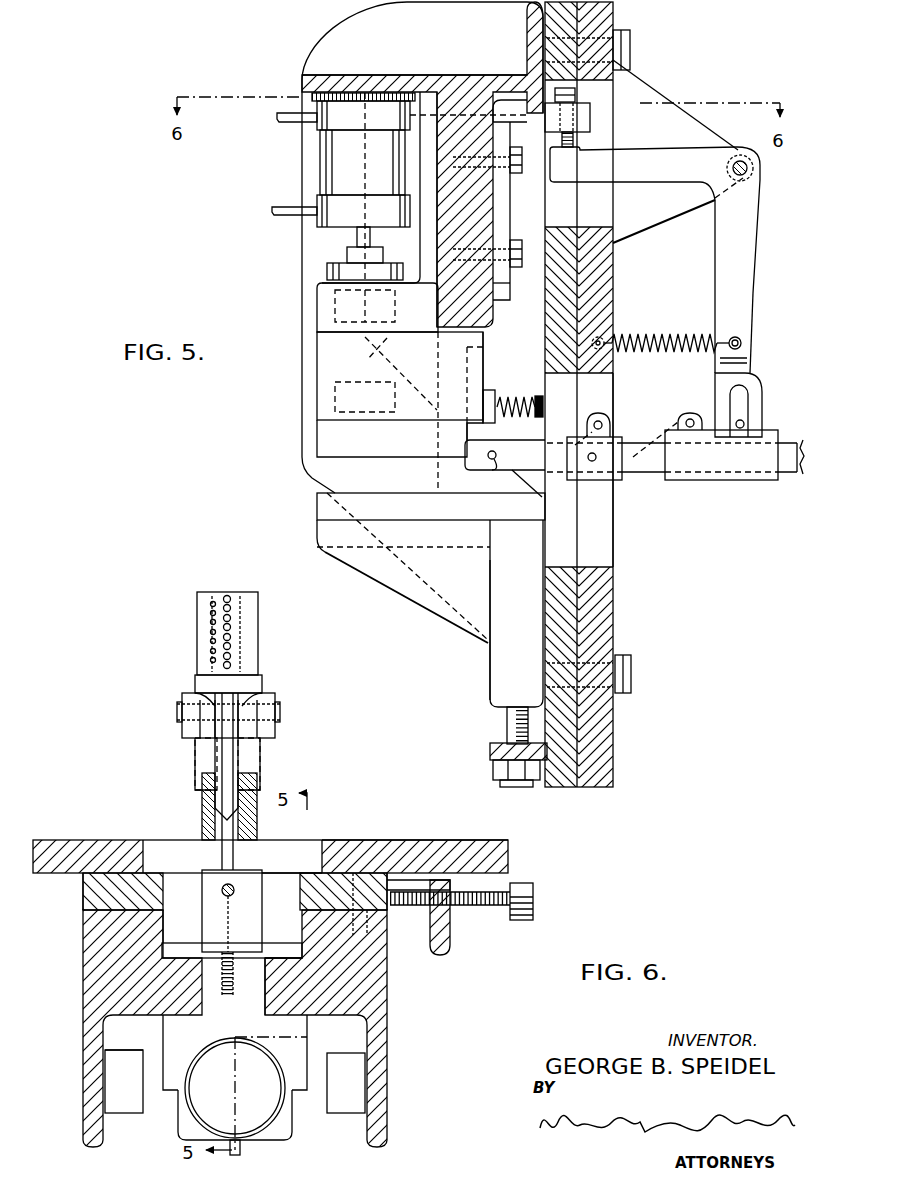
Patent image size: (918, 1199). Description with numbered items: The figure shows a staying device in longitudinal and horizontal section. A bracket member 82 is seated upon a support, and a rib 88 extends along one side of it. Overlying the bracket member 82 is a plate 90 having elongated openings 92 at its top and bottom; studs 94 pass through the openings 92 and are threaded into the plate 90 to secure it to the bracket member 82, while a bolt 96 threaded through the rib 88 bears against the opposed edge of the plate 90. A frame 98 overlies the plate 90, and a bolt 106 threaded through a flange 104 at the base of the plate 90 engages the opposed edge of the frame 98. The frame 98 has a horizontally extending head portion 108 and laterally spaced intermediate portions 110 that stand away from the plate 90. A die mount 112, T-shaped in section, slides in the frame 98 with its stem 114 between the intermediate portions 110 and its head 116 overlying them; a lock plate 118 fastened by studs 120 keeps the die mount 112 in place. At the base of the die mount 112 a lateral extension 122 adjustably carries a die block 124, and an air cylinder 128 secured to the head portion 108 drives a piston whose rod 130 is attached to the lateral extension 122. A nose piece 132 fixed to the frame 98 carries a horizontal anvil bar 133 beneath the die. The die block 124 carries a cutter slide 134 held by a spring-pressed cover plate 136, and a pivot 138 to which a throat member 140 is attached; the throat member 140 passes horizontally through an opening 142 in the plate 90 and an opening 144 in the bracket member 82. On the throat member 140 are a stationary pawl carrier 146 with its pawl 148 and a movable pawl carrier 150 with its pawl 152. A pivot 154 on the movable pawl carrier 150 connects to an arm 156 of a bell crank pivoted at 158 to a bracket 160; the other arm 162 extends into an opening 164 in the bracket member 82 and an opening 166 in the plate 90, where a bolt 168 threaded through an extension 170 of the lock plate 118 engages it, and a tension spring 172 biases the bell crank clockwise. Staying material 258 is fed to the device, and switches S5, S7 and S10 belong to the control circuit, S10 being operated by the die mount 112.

In FIG. 5, the bracket member 82 is at (604, 603).
In FIG. 6, the bracket member 82 is at (395, 831).
In FIG. 6, the rib 88 is at (455, 930).
In FIG. 5, the plate 90 is at (556, 601).
In FIG. 6, the plate 90 is at (388, 905).
In FIG. 5, the elongated openings 92 is at (403, 488).
In FIG. 5, the studs 94 is at (630, 48).
In FIG. 6, the bolt 96 is at (540, 880).
In FIG. 5, the frame 98 is at (296, 270).
In FIG. 6, the frame 98 is at (403, 978).
In FIG. 5, the flange 104 is at (492, 750).
In FIG. 5, the bolt 106 is at (505, 722).
In FIG. 5, the head portion 108 is at (308, 78).
In FIG. 5, the intermediate portions 110 is at (440, 297).
In FIG. 6, the intermediate portions 110 is at (162, 1003).
In FIG. 5, the die mount 112 is at (427, 233).
In FIG. 6, the die mount 112 is at (156, 1066).
In FIG. 6, the stem 114 is at (260, 983).
In FIG. 6, the head 116 is at (300, 1052).
In FIG. 5, the lock plate 118 is at (505, 300).
In FIG. 6, the lock plate 118 is at (288, 948).
In FIG. 5, the studs 120 is at (514, 170).
In FIG. 6, the studs 120 is at (238, 933).
In FIG. 5, the lateral extension 122 is at (325, 312).
In FIG. 6, the lateral extension 122 is at (288, 1117).
In FIG. 5, the die block 124 is at (325, 390).
In FIG. 5, the air cylinder 128 is at (320, 160).
In FIG. 6, the air cylinder 128 is at (200, 1115).
In FIG. 5, the rod 130 is at (358, 236).
In FIG. 5, the nose piece 132 is at (375, 577).
In FIG. 5, the anvil bar 133 is at (380, 503).
In FIG. 5, the cutter slide 134 is at (467, 370).
In FIG. 5, the cover plate 136 is at (496, 398).
In FIG. 5, the pivot 138 is at (490, 463).
In FIG. 5, the throat member 140 is at (630, 443).
In FIG. 6, the throat member 140 is at (260, 622).
In FIG. 5, the opening 142 is at (545, 425).
In FIG. 5, the opening 144 is at (612, 490).
In FIG. 5, the stationary pawl carrier 146 is at (542, 497).
In FIG. 5, the pawl 148 is at (582, 422).
In FIG. 5, the movable pawl carrier 150 is at (707, 465).
In FIG. 6, the movable pawl carrier 150 is at (268, 683).
In FIG. 5, the pawl 152 is at (662, 436).
In FIG. 6, the pawl 152 is at (240, 800).
In FIG. 5, the pivot 154 is at (746, 422).
In FIG. 5, the arm 156 is at (720, 297).
In FIG. 5, the pivot 158 is at (739, 160).
In FIG. 6, the pivot 158 is at (280, 715).
In FIG. 5, the bracket 160 is at (686, 118).
In FIG. 6, the bracket 160 is at (220, 768).
In FIG. 5, the arm 162 is at (660, 186).
In FIG. 6, the arm 162 is at (233, 750).
In FIG. 5, the opening 164 is at (606, 100).
In FIG. 6, the opening 164 is at (171, 845).
In FIG. 5, the opening 166 is at (553, 197).
In FIG. 6, the opening 166 is at (182, 905).
In FIG. 5, the bolt 168 is at (594, 140).
In FIG. 6, the bolt 168 is at (238, 888).
In FIG. 5, the extension 170 is at (590, 117).
In FIG. 6, the extension 170 is at (283, 848).
In FIG. 5, the tension spring 172 is at (640, 337).
In FIG. 6, the staying material 258 is at (240, 590).
In FIG. 5, the switch S5 is at (337, 303).
In FIG. 6, the switch S5 is at (110, 1068).
In FIG. 5, the switch S7 is at (337, 410).
In FIG. 6, the switch S10 is at (355, 1073).